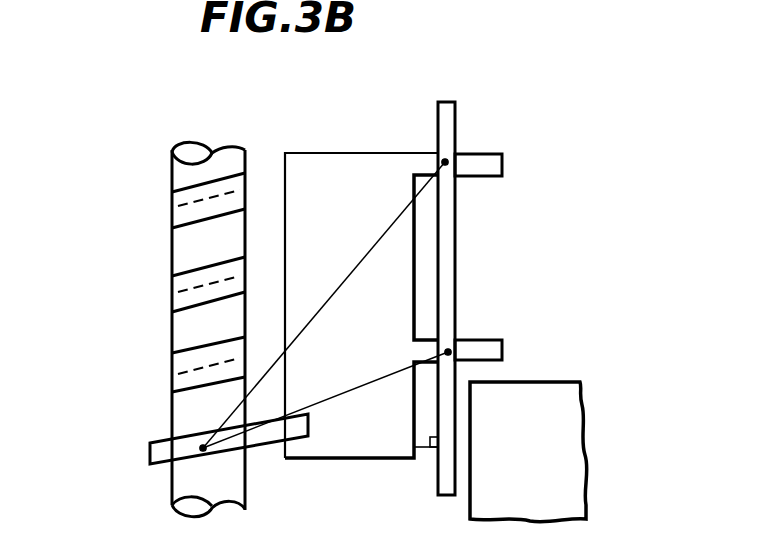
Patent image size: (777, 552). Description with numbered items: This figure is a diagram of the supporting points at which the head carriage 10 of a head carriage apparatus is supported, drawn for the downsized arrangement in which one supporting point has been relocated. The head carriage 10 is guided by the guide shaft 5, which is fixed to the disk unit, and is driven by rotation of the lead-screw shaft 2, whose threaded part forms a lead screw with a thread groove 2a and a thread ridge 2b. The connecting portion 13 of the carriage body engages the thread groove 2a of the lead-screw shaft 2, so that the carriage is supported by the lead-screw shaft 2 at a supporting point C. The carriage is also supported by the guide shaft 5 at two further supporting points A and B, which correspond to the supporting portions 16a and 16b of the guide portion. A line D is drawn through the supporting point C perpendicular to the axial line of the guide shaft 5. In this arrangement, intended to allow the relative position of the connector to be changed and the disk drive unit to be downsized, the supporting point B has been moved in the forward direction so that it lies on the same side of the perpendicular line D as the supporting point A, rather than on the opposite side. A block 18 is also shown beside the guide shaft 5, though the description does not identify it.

The lead-screw shaft 2 is at (172, 252).
The thread groove 2a is at (172, 287).
The thread ridge 2b is at (172, 343).
The connecting portion 13 is at (150, 452).
The head carriage 10 is at (378, 467).
The guide shaft 5 is at (450, 127).
The supporting portion 16a is at (503, 165).
The supporting portion 16b is at (503, 349).
The block 18 is at (573, 440).
The supporting point A is at (445, 162).
The supporting point B is at (448, 352).
The supporting point C is at (203, 450).
The perpendicular line D is at (346, 445).